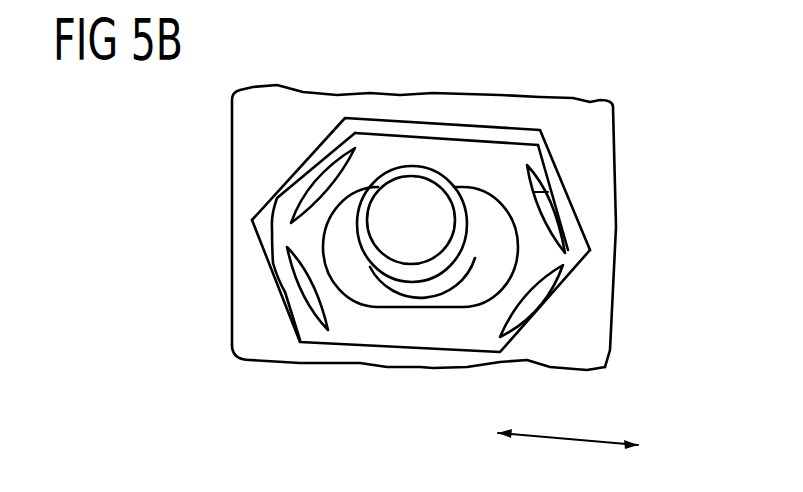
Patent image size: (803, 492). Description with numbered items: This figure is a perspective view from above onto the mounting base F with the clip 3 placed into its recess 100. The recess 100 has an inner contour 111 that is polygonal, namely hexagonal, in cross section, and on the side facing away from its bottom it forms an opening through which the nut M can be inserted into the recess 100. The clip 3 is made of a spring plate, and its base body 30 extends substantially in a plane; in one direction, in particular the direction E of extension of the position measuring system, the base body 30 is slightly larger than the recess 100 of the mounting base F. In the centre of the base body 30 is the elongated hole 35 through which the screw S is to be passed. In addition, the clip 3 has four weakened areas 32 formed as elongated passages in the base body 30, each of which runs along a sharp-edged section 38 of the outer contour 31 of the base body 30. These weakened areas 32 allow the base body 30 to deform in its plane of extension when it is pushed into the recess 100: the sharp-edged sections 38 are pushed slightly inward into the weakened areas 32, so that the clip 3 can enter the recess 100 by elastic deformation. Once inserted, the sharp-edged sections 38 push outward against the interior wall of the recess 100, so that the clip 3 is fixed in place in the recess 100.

The recess 100 is at (412, 112).
The screw S is at (428, 200).
The outer contour 31 is at (477, 142).
The inner contour 111 is at (513, 127).
The sharp-edged section 38 is at (286, 199).
The nut M is at (507, 232).
The elongated hole 35 is at (520, 263).
The mounting base F is at (570, 337).
The weakened area 32 is at (307, 300).
The clip 3 is at (386, 372).
The base body 30 is at (448, 345).
The direction of extension E is at (568, 423).